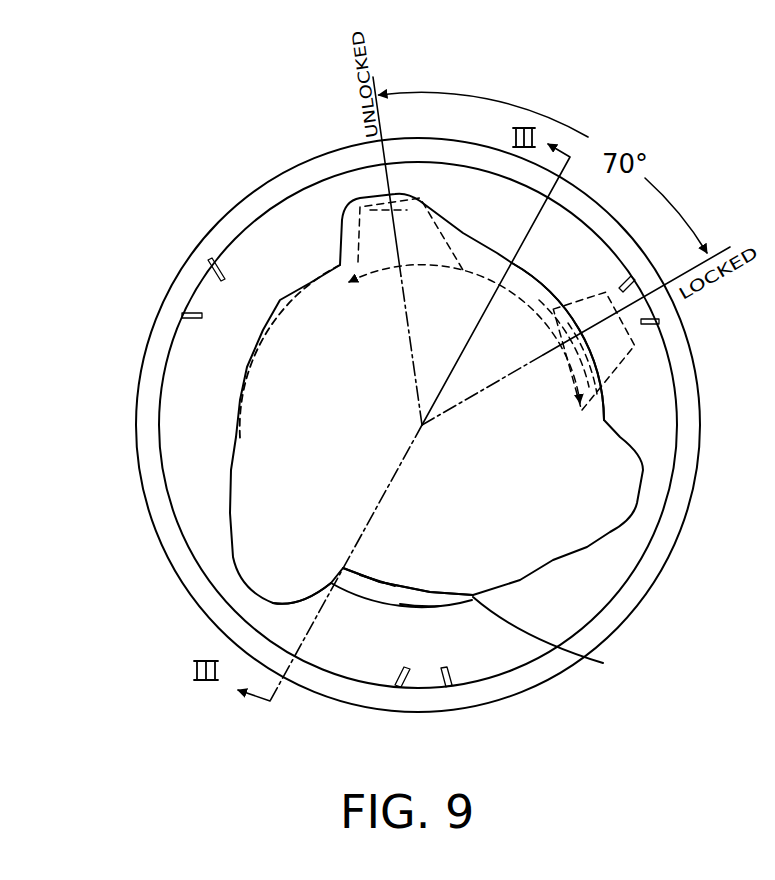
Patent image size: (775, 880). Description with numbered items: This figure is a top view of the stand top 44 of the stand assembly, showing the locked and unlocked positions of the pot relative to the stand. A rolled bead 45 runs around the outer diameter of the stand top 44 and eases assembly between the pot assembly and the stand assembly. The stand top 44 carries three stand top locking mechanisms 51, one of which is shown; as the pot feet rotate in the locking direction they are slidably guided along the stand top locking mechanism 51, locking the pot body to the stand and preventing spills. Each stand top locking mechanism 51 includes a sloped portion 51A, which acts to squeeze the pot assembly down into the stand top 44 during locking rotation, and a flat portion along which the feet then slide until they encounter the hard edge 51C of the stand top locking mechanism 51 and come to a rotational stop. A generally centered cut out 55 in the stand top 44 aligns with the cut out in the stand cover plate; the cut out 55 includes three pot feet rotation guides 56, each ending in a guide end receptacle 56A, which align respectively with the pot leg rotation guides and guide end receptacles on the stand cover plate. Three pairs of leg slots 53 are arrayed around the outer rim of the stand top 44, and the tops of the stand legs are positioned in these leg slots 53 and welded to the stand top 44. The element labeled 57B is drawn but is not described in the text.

The stand top 44 is at (245, 170).
The rolled bead 45 is at (211, 261).
The stand top locking mechanism 51 is at (344, 564).
The sloped portion 51A is at (603, 663).
The edge 51C is at (426, 520).
The leg slots 53 is at (408, 669).
The cut out 55 is at (244, 367).
The pot feet rotation guides 56 is at (284, 302).
The guide end receptacles 56A is at (341, 215).
The spring leg 57B is at (418, 594).